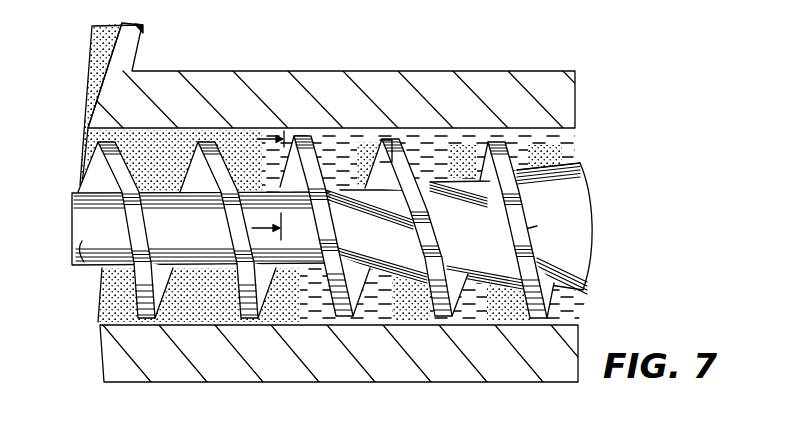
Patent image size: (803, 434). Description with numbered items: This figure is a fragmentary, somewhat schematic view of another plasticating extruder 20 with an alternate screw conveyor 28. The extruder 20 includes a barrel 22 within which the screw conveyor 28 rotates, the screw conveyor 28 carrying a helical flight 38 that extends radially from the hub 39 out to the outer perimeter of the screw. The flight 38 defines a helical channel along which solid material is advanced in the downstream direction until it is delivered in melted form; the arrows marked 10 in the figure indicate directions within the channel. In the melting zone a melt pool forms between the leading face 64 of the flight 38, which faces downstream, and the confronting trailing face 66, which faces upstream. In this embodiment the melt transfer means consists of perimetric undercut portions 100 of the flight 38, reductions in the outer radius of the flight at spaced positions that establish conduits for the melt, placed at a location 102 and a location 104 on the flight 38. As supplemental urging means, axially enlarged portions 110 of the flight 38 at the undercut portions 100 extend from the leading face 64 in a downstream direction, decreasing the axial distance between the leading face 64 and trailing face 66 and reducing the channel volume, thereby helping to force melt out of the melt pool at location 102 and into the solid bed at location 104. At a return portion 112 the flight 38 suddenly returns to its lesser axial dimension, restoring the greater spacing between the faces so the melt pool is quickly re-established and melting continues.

The direction of material flow 10 is at (260, 182).
The plasticating extruder 20 is at (457, 62).
The barrel 22 is at (507, 90).
The screw conveyor 28 is at (563, 232).
The helical flight 38 is at (208, 133).
The hub 39 is at (150, 227).
The leading face 64 is at (403, 128).
The trailing face 66 is at (406, 128).
The perimetric undercut portion 100 is at (344, 150).
The location 102 is at (348, 140).
The location 104 is at (316, 150).
The axially enlarged portion 110 is at (483, 214).
The return portion 112 is at (430, 219).